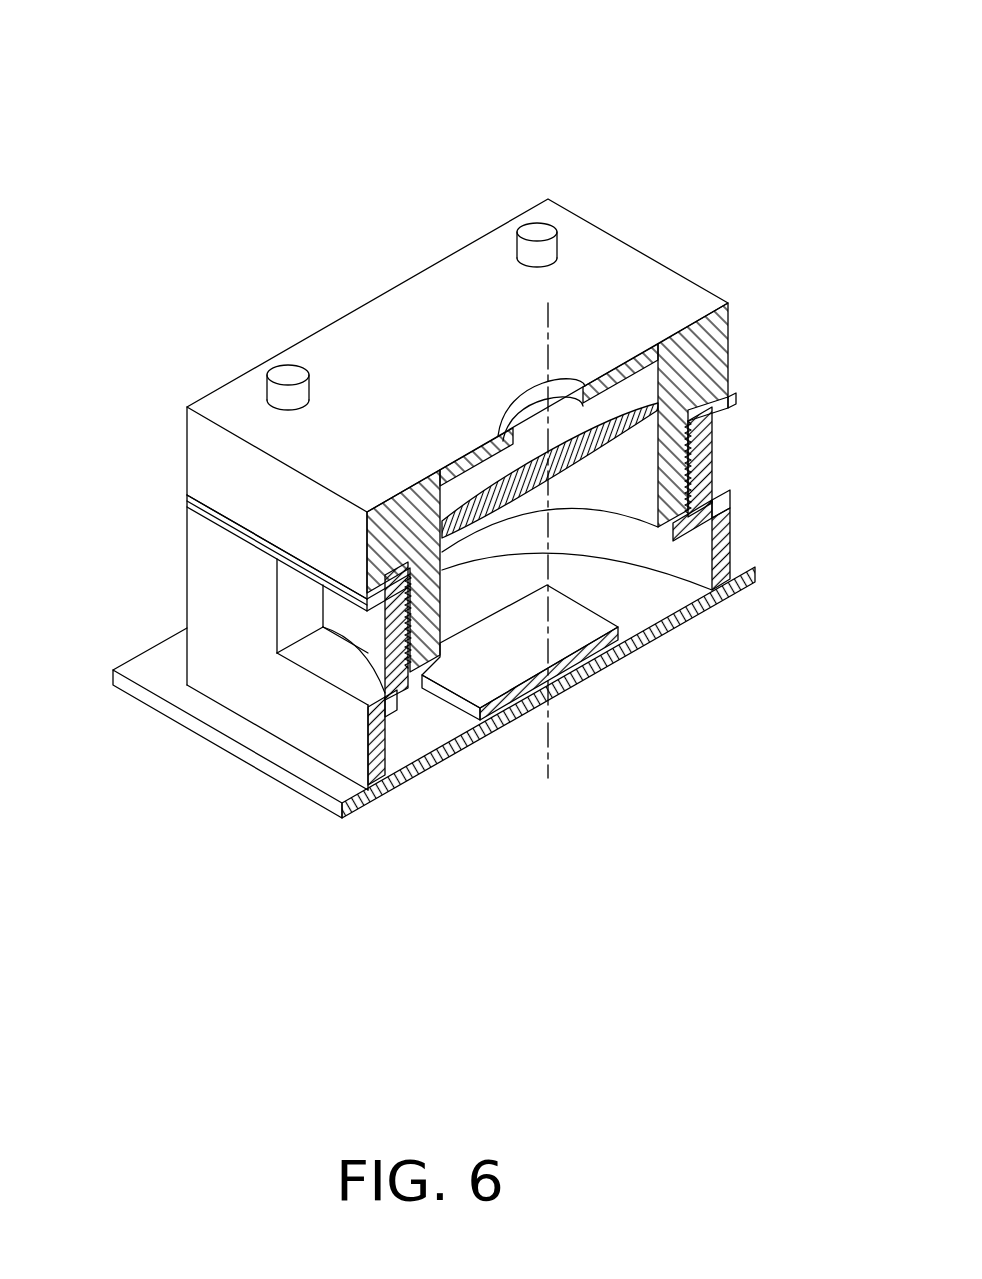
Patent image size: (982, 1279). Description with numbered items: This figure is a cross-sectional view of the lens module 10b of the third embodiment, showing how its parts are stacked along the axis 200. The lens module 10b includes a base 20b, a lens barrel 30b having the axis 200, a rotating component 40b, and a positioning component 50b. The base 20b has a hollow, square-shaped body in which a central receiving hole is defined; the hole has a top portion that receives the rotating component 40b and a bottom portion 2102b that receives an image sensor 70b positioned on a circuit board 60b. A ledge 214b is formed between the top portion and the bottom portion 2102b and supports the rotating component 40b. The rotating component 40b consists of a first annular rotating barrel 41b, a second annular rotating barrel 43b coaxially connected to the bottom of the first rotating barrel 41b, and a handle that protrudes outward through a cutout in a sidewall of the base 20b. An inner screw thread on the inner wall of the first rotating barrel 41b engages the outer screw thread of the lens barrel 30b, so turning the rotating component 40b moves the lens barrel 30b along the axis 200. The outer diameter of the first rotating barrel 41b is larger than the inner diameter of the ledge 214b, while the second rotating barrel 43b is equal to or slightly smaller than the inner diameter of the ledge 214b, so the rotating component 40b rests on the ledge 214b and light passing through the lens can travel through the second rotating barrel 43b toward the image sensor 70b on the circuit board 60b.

The lens module 10b is at (490, 40).
The axis 200 is at (550, 323).
The bottom portion 2102b is at (583, 535).
The lens barrel 30b is at (232, 473).
The positioning component 50b is at (187, 503).
The base 20b is at (222, 610).
The rotating component 40b is at (360, 638).
The first annular rotating barrel 41b is at (393, 650).
The second annular rotating barrel 43b is at (407, 683).
The image sensor 70b is at (568, 642).
The ledge 214b is at (703, 522).
The circuit board 60b is at (193, 722).